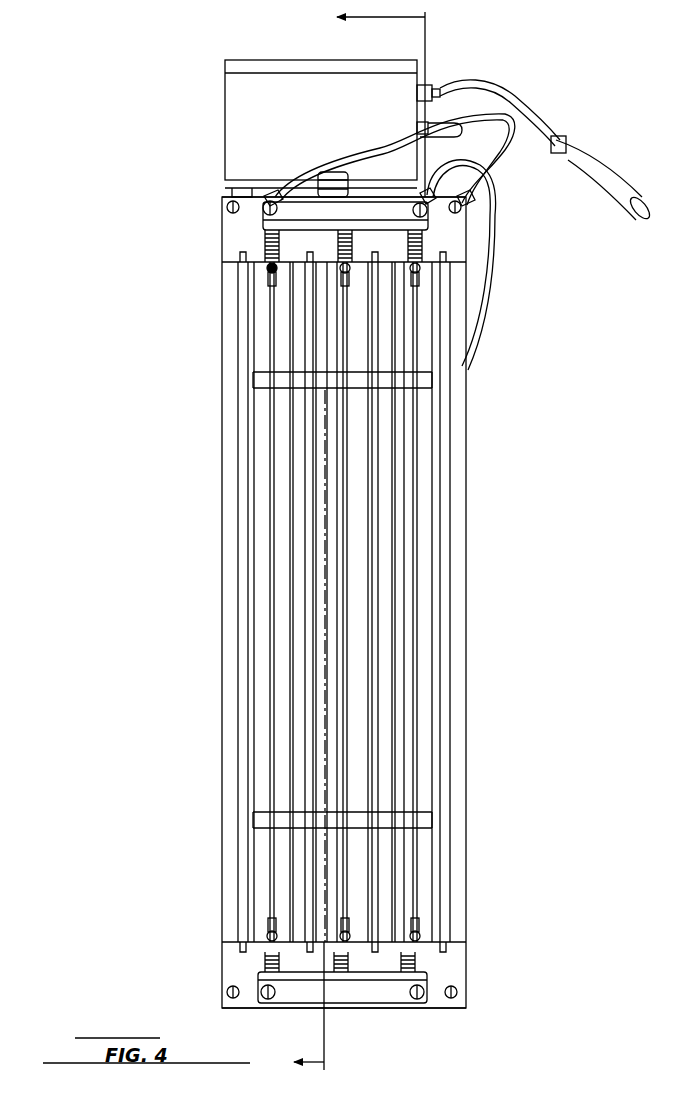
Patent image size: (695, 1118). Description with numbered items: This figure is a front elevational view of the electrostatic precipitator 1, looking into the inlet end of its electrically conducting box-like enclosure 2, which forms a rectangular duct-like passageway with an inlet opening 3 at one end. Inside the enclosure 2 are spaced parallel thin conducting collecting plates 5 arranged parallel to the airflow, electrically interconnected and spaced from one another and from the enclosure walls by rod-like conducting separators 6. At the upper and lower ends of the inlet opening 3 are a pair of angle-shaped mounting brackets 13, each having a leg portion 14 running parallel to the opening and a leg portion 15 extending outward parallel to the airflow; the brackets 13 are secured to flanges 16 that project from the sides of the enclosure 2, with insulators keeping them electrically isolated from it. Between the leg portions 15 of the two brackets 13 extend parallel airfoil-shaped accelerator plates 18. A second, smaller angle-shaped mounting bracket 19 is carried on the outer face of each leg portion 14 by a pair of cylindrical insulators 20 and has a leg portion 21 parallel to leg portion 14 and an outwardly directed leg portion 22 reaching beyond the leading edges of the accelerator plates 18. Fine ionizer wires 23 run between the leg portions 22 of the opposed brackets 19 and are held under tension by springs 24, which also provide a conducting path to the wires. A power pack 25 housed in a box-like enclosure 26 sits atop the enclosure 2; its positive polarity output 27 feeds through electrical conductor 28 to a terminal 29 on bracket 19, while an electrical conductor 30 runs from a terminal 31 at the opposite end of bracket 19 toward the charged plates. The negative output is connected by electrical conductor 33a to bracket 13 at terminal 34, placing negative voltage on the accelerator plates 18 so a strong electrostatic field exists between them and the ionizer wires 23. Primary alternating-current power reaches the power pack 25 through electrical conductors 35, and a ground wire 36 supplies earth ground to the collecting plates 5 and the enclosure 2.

The electrostatic precipitator 1 is at (160, 103).
The box-like enclosure 2 is at (226, 322).
The inlet opening 3 is at (356, 548).
The collecting plate 5 is at (343, 551).
The conducting separator 6 is at (262, 383).
The mounting bracket 13 is at (229, 222).
The leg portion 14 is at (456, 257).
The leg portion 15 is at (240, 263).
The flange 16 is at (232, 480).
The accelerator plate 18 is at (240, 612).
The second mounting bracket 19 is at (375, 995).
The cylindrical insulator 20 is at (263, 206).
The leg portion 21 is at (318, 216).
The leg portion 22 is at (418, 268).
The ionizer wire 23 is at (416, 356).
The tension spring 24 is at (175, 956).
The power pack 25 is at (255, 57).
The box-like enclosure 26 is at (290, 61).
The positive polarity output 27 is at (417, 128).
The electrical conductor 28 is at (312, 165).
The terminal 29 is at (265, 196).
The electrical conductor 30 is at (492, 235).
The terminal 31 is at (421, 196).
The electrical conductor 33a is at (495, 185).
The terminal 34 is at (466, 205).
The electrical conductors 35 is at (470, 88).
The ground wire 36 is at (527, 145).